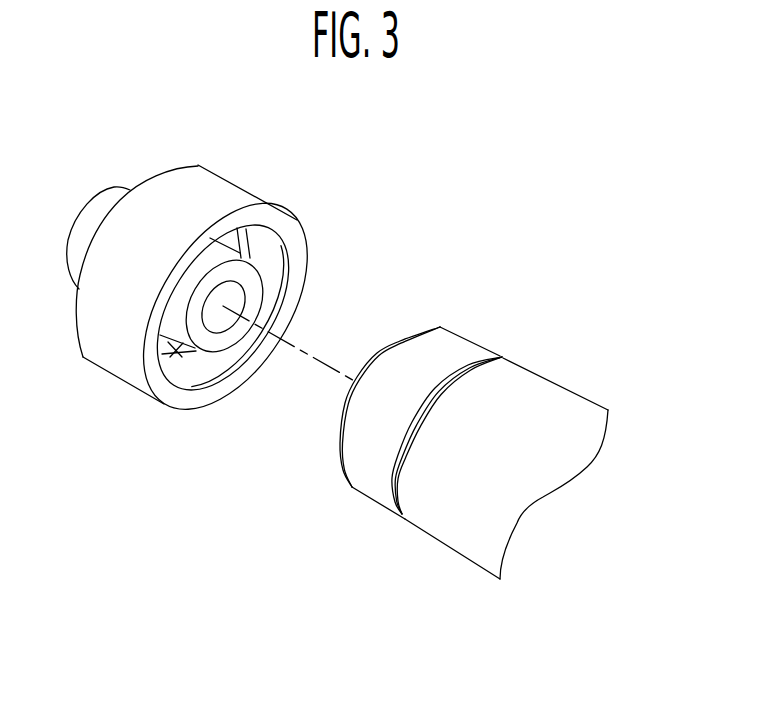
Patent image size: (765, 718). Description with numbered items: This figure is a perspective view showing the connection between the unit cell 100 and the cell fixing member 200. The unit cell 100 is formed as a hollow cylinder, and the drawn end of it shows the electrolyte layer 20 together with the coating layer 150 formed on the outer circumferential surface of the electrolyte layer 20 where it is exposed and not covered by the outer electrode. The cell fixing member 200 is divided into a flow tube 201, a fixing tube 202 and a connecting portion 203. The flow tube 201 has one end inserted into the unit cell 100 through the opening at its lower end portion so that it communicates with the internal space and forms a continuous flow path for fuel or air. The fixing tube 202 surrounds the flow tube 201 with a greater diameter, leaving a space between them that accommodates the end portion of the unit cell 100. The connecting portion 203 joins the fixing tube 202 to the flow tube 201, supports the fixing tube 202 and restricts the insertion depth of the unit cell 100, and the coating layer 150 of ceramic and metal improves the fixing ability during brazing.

The cell fixing member 200 is at (220, 302).
The flow tube 201 is at (246, 277).
The fixing tube 202 is at (210, 393).
The connecting portion 203 is at (178, 364).
The unit cell 100 is at (479, 451).
The coating layer 150 is at (368, 477).
The electrolyte layer 20 is at (444, 520).